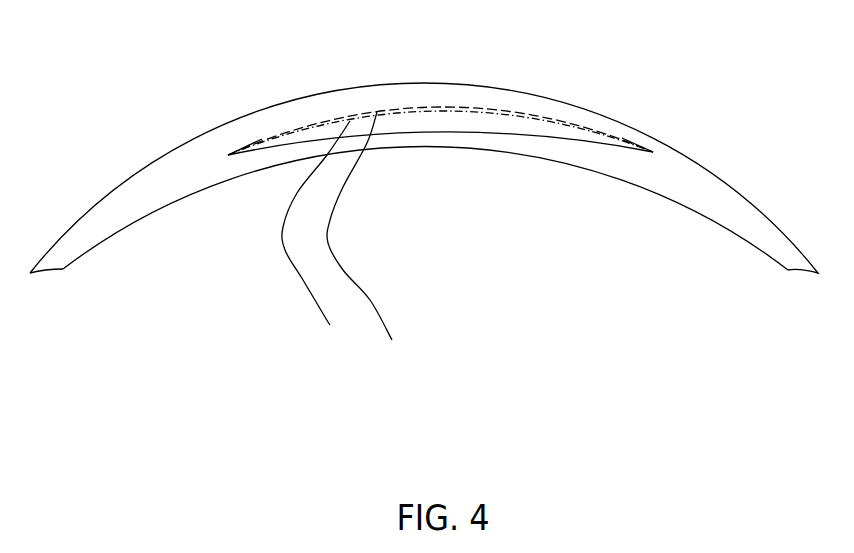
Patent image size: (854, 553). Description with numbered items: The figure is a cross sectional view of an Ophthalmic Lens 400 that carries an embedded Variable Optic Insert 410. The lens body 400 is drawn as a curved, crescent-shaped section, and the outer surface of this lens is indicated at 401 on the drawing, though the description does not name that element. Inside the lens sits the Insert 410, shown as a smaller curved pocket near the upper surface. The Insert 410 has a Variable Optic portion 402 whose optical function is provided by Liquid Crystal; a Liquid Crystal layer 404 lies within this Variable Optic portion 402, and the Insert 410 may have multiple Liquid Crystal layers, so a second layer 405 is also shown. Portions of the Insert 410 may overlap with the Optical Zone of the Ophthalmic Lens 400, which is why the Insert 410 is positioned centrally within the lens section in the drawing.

The Ophthalmic Lens 400 is at (424, 149).
The lens outer surface / lens body 401 is at (709, 166).
The Variable Optic portion 402 is at (607, 184).
The Liquid Crystal layer 404 is at (316, 236).
The Liquid Crystal layer 405 is at (368, 243).
The Variable Optic Insert 410 is at (441, 105).